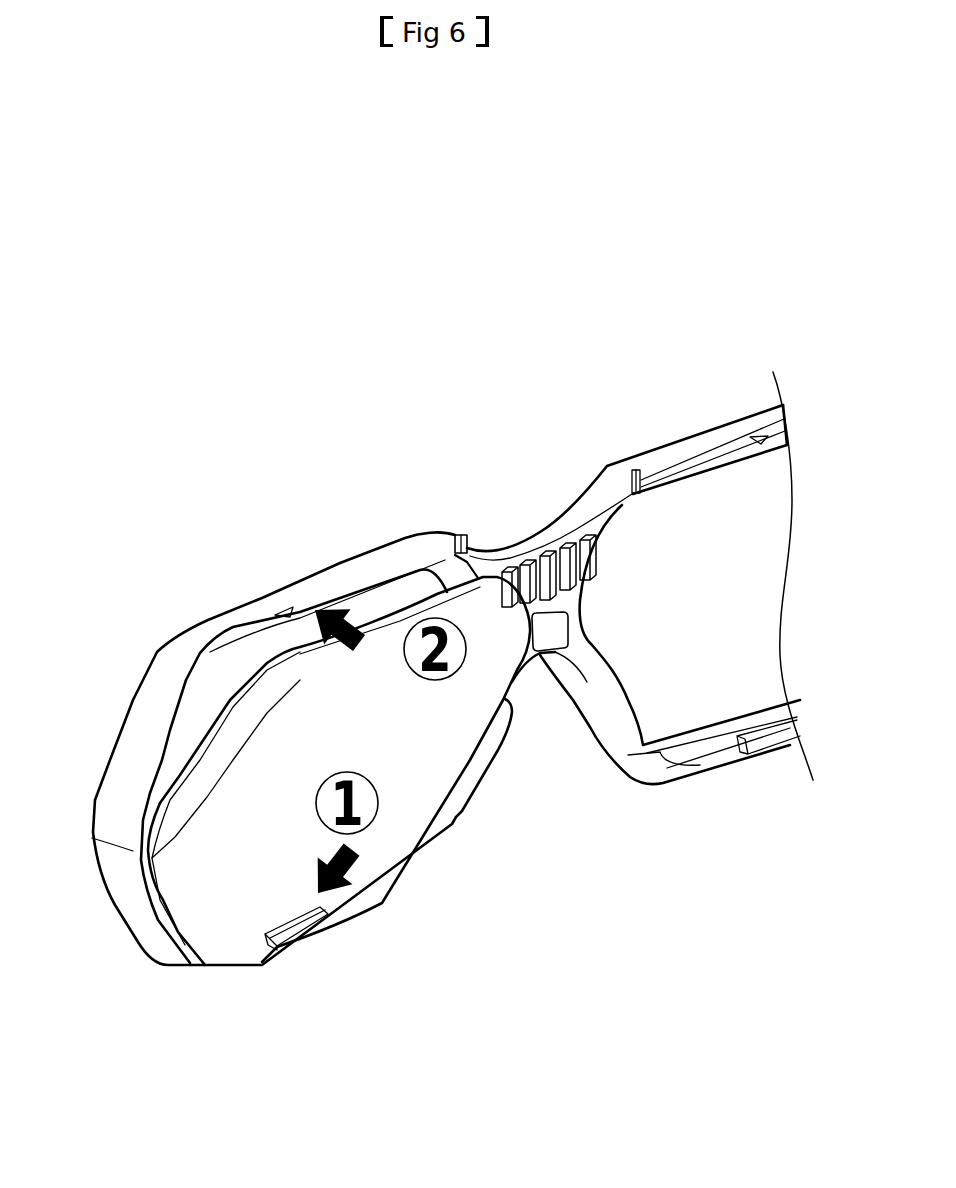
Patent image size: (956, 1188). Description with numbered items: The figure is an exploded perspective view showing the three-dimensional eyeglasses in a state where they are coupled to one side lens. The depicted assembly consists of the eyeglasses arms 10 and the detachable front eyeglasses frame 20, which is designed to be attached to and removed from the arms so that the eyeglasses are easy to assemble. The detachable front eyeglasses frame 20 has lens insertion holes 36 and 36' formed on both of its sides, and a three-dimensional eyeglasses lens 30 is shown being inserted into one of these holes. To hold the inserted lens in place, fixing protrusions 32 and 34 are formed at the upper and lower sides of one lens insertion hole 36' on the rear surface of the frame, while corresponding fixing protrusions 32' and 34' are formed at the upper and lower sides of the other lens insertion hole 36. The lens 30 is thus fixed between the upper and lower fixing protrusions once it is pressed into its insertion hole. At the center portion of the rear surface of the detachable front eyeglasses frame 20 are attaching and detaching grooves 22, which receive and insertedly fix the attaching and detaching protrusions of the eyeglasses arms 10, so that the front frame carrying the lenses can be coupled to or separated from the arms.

The eyeglasses arms 10 is at (428, 535).
The detachable front eyeglasses frame 20 is at (130, 680).
The attaching and detaching grooves 22 is at (563, 570).
The 3D eyeglasses lens 30 is at (475, 699).
The fixing protrusion 32 is at (297, 530).
The fixing protrusion 32' is at (753, 393).
The fixing protrusion 34 is at (359, 974).
The fixing protrusion 34' is at (768, 784).
The lens insertion hole 36 is at (739, 534).
The lens insertion hole 36' is at (309, 717).